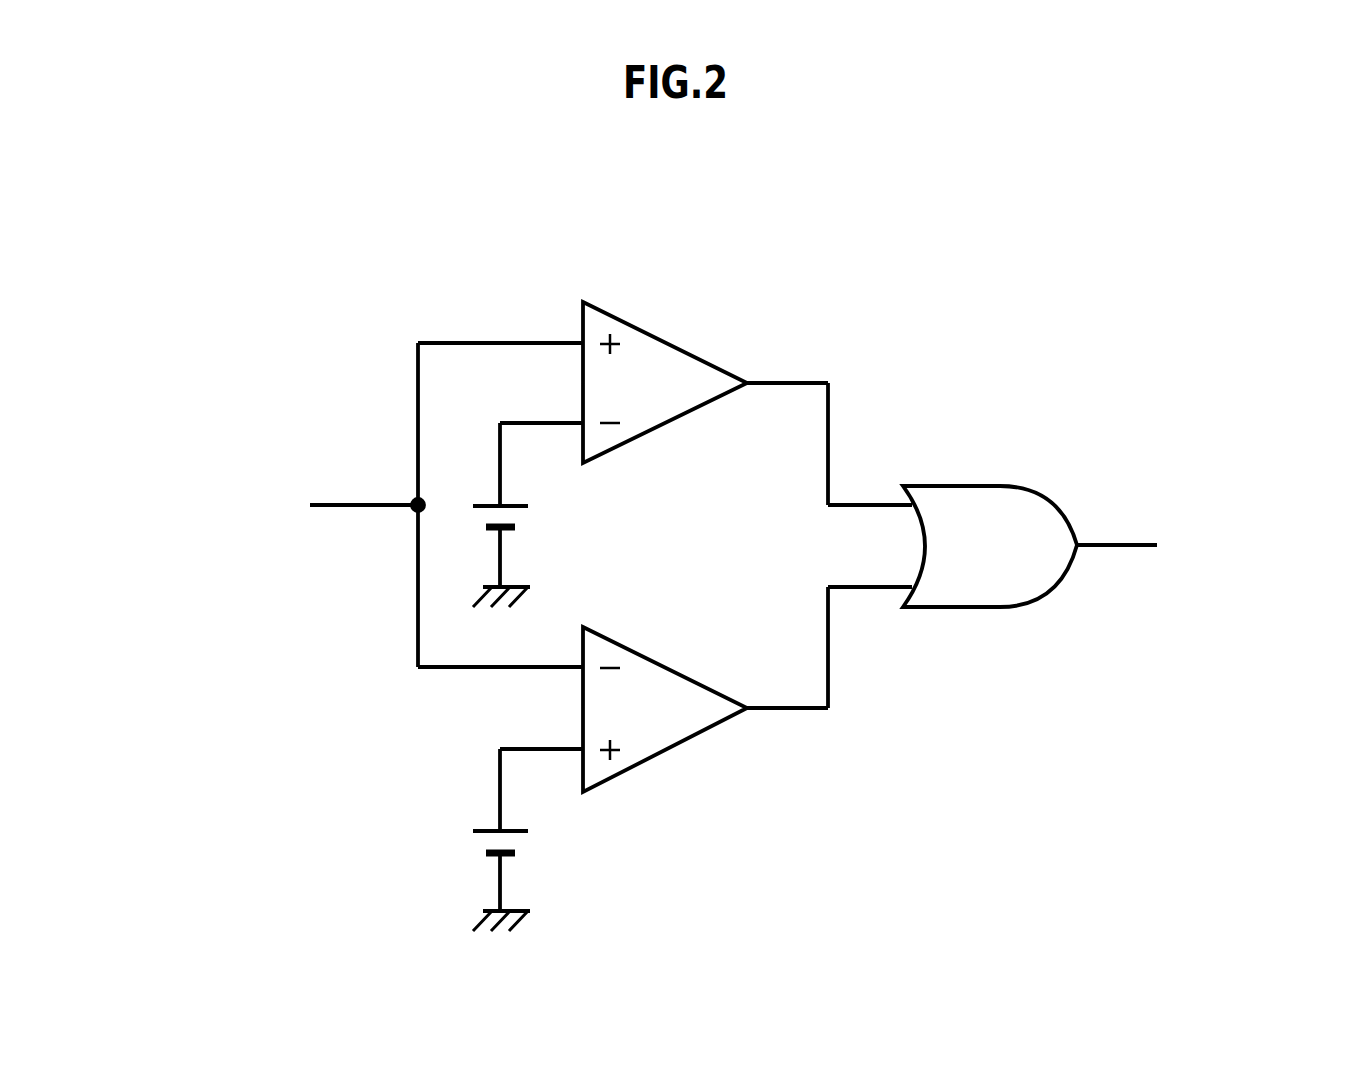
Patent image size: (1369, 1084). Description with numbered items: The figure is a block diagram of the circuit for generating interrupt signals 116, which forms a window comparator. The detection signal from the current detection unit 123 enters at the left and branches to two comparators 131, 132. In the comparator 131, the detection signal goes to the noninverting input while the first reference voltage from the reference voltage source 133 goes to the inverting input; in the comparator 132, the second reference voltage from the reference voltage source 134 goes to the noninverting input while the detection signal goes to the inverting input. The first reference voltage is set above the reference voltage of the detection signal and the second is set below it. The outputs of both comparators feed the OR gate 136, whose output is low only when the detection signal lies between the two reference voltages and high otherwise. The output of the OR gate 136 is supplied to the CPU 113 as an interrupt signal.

The circuit for generating interrupt signals 116 is at (382, 216).
The comparator 131 is at (667, 340).
The comparator 132 is at (667, 667).
The reference voltage source 133 is at (517, 508).
The reference voltage source 134 is at (517, 833).
The OR gate 136 is at (993, 483).
The current detection unit 123 is at (181, 520).
The CPU 113 is at (1255, 548).